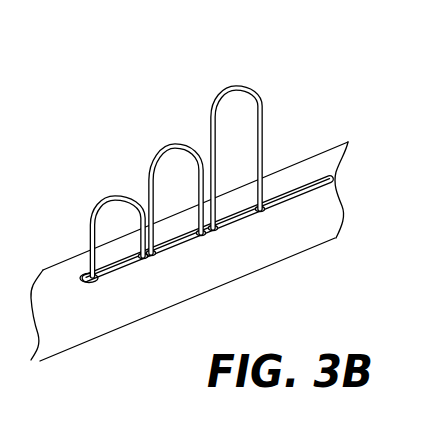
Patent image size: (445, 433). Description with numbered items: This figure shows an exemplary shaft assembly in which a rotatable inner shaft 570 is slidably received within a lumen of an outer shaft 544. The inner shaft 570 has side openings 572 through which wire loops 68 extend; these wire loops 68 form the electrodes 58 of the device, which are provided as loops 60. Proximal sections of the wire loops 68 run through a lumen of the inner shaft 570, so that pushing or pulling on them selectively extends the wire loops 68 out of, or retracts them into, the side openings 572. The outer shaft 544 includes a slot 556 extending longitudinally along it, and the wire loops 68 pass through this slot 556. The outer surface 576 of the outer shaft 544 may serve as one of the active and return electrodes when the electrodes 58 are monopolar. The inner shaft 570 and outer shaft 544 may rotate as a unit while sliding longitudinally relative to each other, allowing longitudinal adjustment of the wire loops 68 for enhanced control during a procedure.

The electrodes 58 is at (164, 121).
The loops 60 is at (228, 89).
The wire loops 68 is at (112, 198).
The outer shaft 544 is at (290, 257).
The slot 556 is at (318, 191).
The rotatable inner shaft 570 is at (289, 192).
The side openings 572 is at (250, 216).
The outer surface 576 is at (154, 290).